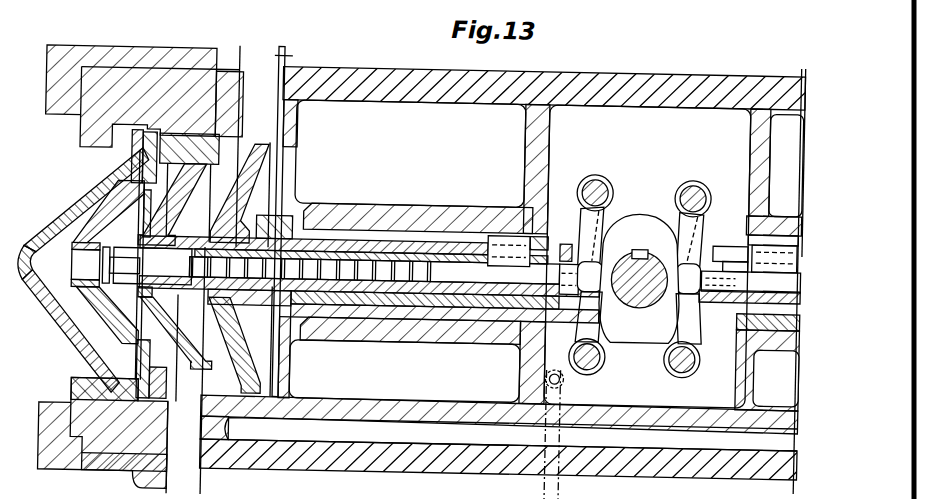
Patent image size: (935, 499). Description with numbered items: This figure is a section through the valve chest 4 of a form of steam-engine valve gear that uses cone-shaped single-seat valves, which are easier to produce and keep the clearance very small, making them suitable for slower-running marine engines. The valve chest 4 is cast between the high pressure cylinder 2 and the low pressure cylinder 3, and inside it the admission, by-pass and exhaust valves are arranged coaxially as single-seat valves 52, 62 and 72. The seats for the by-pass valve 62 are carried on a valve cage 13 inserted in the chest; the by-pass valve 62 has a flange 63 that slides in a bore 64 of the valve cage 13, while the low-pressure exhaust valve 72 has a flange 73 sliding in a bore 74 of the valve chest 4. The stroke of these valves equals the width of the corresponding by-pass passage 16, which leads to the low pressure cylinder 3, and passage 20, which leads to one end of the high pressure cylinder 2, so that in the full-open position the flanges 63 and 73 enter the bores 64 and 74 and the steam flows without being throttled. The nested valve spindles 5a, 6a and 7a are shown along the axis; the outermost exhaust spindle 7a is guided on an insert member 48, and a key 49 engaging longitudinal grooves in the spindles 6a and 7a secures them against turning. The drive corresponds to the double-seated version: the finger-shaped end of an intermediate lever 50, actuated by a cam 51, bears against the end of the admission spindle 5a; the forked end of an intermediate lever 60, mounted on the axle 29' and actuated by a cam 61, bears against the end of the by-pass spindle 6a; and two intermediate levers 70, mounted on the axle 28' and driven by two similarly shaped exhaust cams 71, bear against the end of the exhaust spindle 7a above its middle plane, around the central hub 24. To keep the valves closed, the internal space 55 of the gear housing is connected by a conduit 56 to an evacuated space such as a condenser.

The high pressure cylinder 2 is at (308, 468).
The low pressure cylinder 3 is at (424, 84).
The valve chest 4 is at (99, 85).
The admission valve spindle 5a is at (348, 281).
The by-pass valve spindle 6a is at (425, 293).
The exhaust valve spindle 7a is at (427, 247).
The valve cage 13 is at (160, 139).
The by-pass passage 16 is at (197, 468).
The passage 20 is at (283, 60).
The shaft hub 24 is at (640, 300).
The axle 28' is at (595, 178).
The axle 29' is at (697, 347).
The insert member 48 is at (354, 231).
The key 49 is at (502, 237).
The intermediate lever 50 is at (590, 230).
The cam 51 is at (645, 225).
The single-seat valve 52 is at (117, 325).
The internal space of the gear housing 55 is at (731, 157).
The conduit 56 is at (562, 440).
The intermediate lever 60 is at (588, 320).
The cam 61 is at (646, 333).
The by-pass valve 62 is at (179, 178).
The flange 63 is at (197, 172).
The bore 64 is at (163, 391).
The intermediate levers 70 is at (588, 261).
The exhaust cams 71 is at (613, 226).
The low-pressure exhaust valve 72 is at (281, 183).
The flange 73 is at (262, 148).
The bore 74 is at (236, 133).